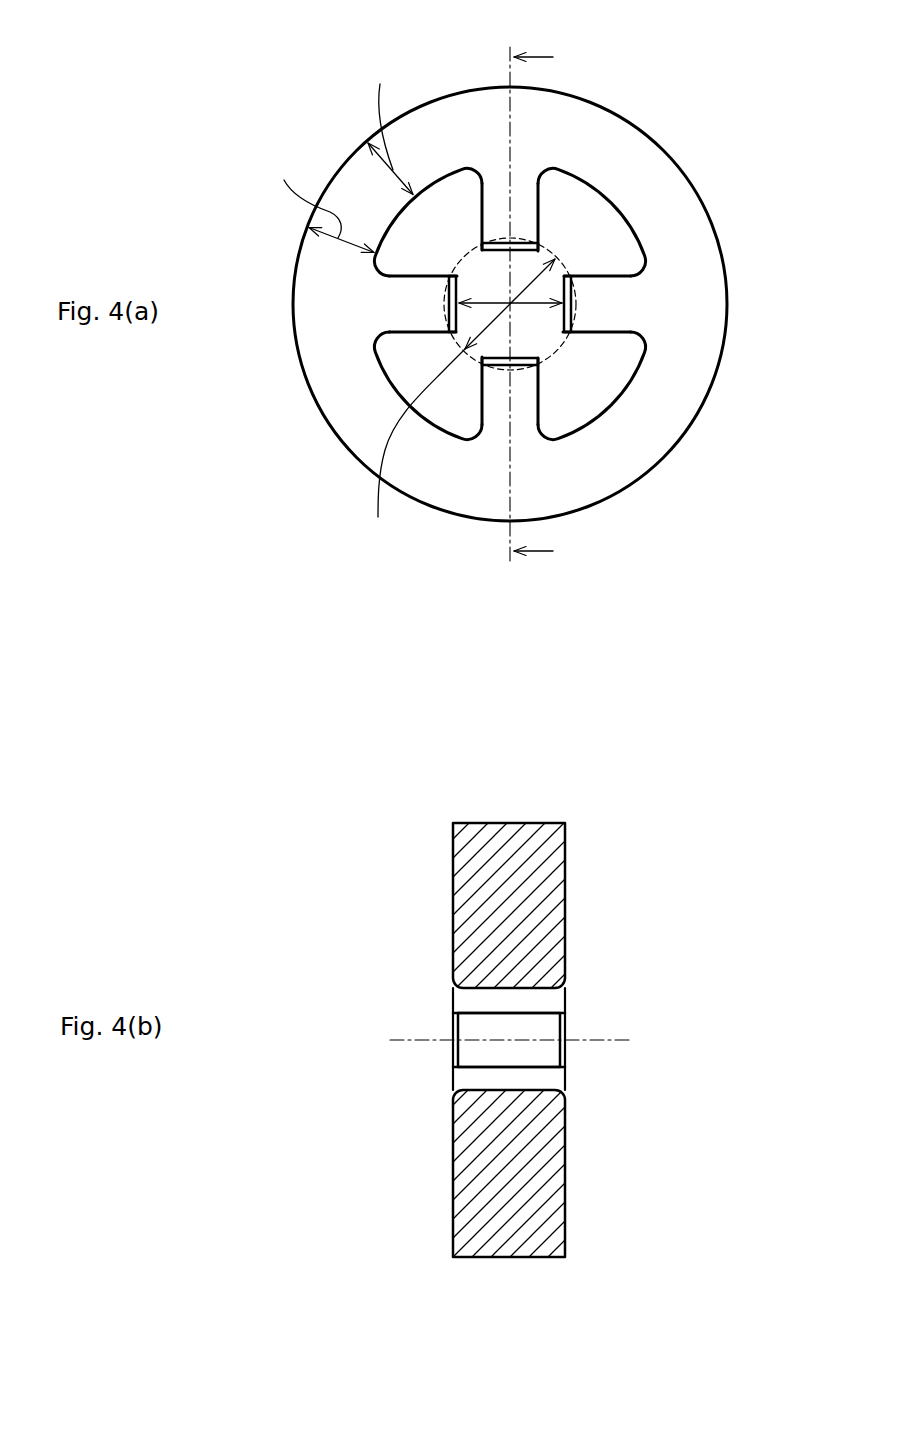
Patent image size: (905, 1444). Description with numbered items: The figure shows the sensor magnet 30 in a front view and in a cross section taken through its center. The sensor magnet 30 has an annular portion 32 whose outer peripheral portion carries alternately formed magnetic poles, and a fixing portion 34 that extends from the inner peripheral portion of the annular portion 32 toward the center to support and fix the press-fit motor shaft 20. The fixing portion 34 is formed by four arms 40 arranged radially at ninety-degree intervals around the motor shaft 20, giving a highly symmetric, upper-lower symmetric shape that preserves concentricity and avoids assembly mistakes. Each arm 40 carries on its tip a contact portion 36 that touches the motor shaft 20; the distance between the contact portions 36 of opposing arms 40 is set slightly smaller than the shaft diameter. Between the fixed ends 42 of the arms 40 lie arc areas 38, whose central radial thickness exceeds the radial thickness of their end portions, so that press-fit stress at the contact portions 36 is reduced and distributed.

In FIG. 4A, the motor shaft 20 is at (473, 547).
In FIG. 4A, the sensor magnet 30 is at (497, 643).
In FIG. 4B, the sensor magnet 30 is at (497, 1343).
In FIG. 4A, the annular portion 32 is at (600, 124).
In FIG. 4B, the annular portion 32 is at (507, 835).
In FIG. 4A, the fixing portion 34 is at (541, 380).
In FIG. 4B, the fixing portion 34 is at (570, 969).
In FIG. 4A, the contact portions 36 is at (403, 303).
In FIG. 4B, the contact portions 36 is at (510, 995).
In FIG. 4A, the arc areas 38 is at (357, 195).
In FIG. 4A, the arms 40 is at (527, 212).
In FIG. 4A, the fixed ends 42 is at (500, 160).